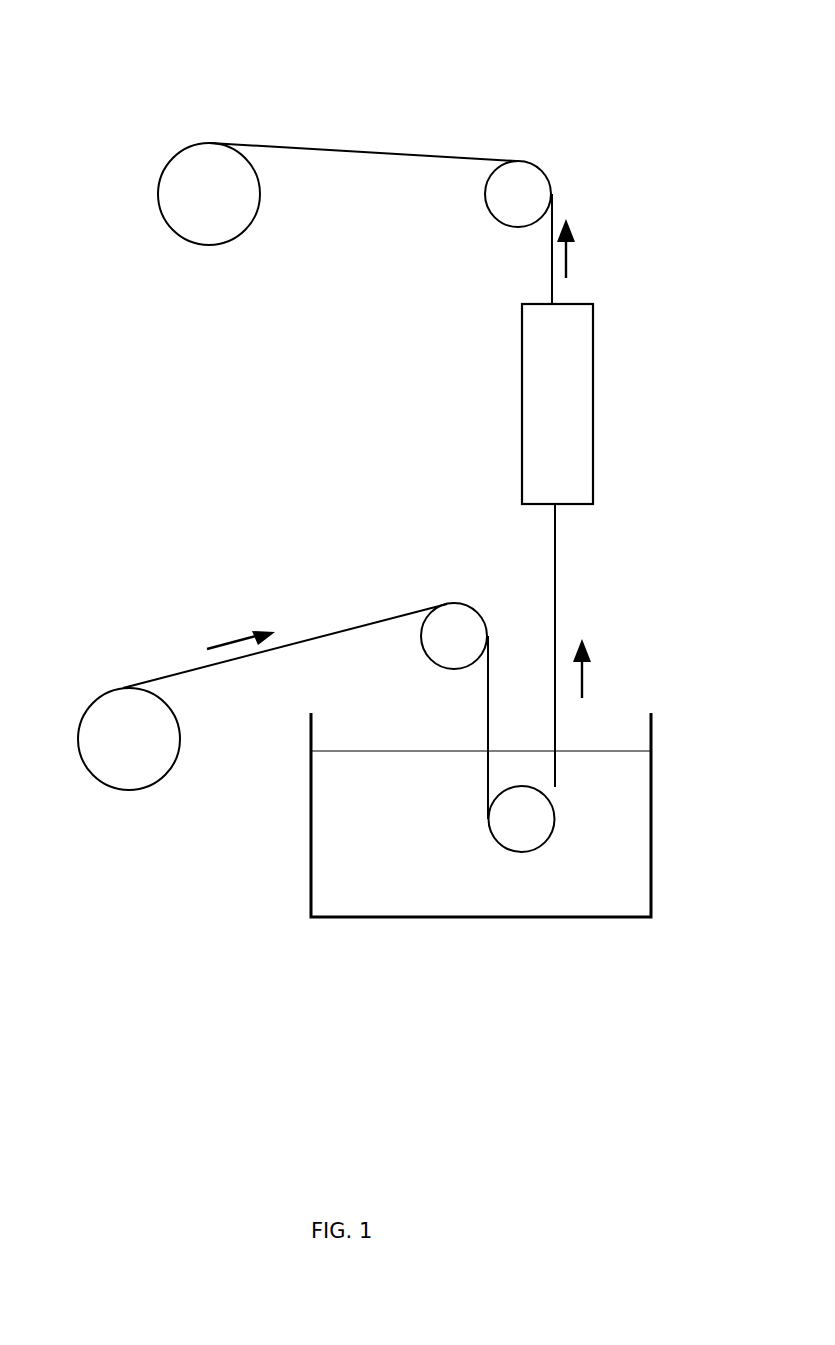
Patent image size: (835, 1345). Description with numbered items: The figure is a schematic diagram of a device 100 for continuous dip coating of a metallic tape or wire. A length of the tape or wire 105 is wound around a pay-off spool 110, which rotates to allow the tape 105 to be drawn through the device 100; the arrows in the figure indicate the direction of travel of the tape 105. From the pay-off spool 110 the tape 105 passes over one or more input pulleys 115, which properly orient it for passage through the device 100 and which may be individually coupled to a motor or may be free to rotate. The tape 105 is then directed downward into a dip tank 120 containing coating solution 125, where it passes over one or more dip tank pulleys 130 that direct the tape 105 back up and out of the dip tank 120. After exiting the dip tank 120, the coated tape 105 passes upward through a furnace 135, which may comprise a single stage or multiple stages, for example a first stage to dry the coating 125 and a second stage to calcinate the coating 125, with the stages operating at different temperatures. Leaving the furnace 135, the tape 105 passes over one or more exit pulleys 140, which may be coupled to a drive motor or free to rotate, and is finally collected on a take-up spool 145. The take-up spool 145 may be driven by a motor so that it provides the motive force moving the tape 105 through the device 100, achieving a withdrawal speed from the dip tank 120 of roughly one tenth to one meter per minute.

The device 100 is at (107, 66).
The tape or wire 105 is at (355, 148).
The pay-off spool 110 is at (115, 791).
The input pulleys 115 is at (457, 630).
The dip tank 120 is at (652, 805).
The coating solution 125 is at (608, 779).
The dip tank pulleys 130 is at (515, 835).
The furnace 135 is at (570, 393).
The exit pulleys 140 is at (513, 187).
The take-up spool 145 is at (170, 194).